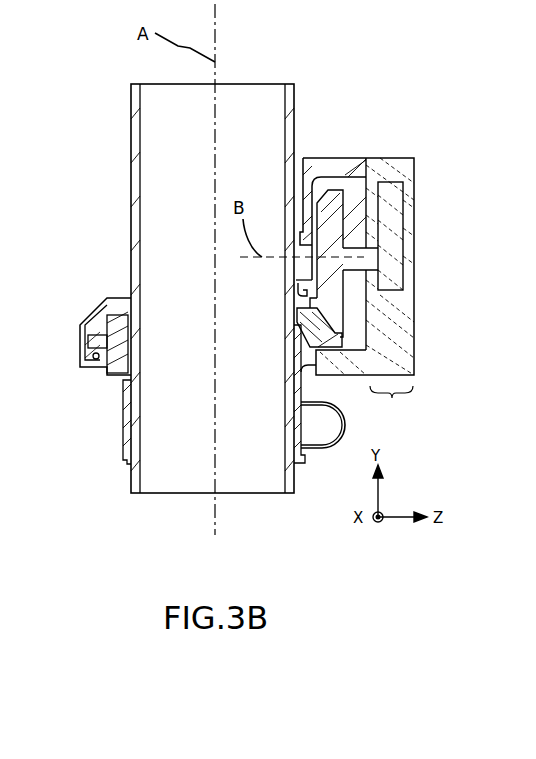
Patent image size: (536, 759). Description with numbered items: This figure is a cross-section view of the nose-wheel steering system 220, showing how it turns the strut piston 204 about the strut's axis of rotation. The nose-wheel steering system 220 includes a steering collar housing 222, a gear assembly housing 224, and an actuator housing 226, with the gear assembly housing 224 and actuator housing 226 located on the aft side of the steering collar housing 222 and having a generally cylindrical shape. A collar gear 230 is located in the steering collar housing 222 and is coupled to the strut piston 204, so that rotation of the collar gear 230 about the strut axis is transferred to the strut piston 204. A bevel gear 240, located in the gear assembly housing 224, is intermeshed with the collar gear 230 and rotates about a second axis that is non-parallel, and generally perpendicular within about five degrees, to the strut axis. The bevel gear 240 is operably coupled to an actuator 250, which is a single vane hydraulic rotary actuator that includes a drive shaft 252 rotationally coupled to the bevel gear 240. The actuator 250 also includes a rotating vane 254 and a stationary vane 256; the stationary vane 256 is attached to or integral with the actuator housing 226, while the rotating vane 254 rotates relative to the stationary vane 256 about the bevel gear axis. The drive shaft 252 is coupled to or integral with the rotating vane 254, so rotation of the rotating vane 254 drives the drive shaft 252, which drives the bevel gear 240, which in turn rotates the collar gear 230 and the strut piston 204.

The strut piston 204 is at (131, 126).
The nose-wheel steering system 220 is at (358, 243).
The steering collar housing 222 is at (131, 300).
The gear assembly housing 224 is at (302, 205).
The actuator housing 226 is at (403, 223).
The collar gear 230 is at (300, 328).
The bevel gear 240 is at (310, 288).
The actuator 250 is at (391, 406).
The drive shaft 252 is at (350, 250).
The rotating vane 254 is at (392, 228).
The stationary vane 256 is at (385, 305).